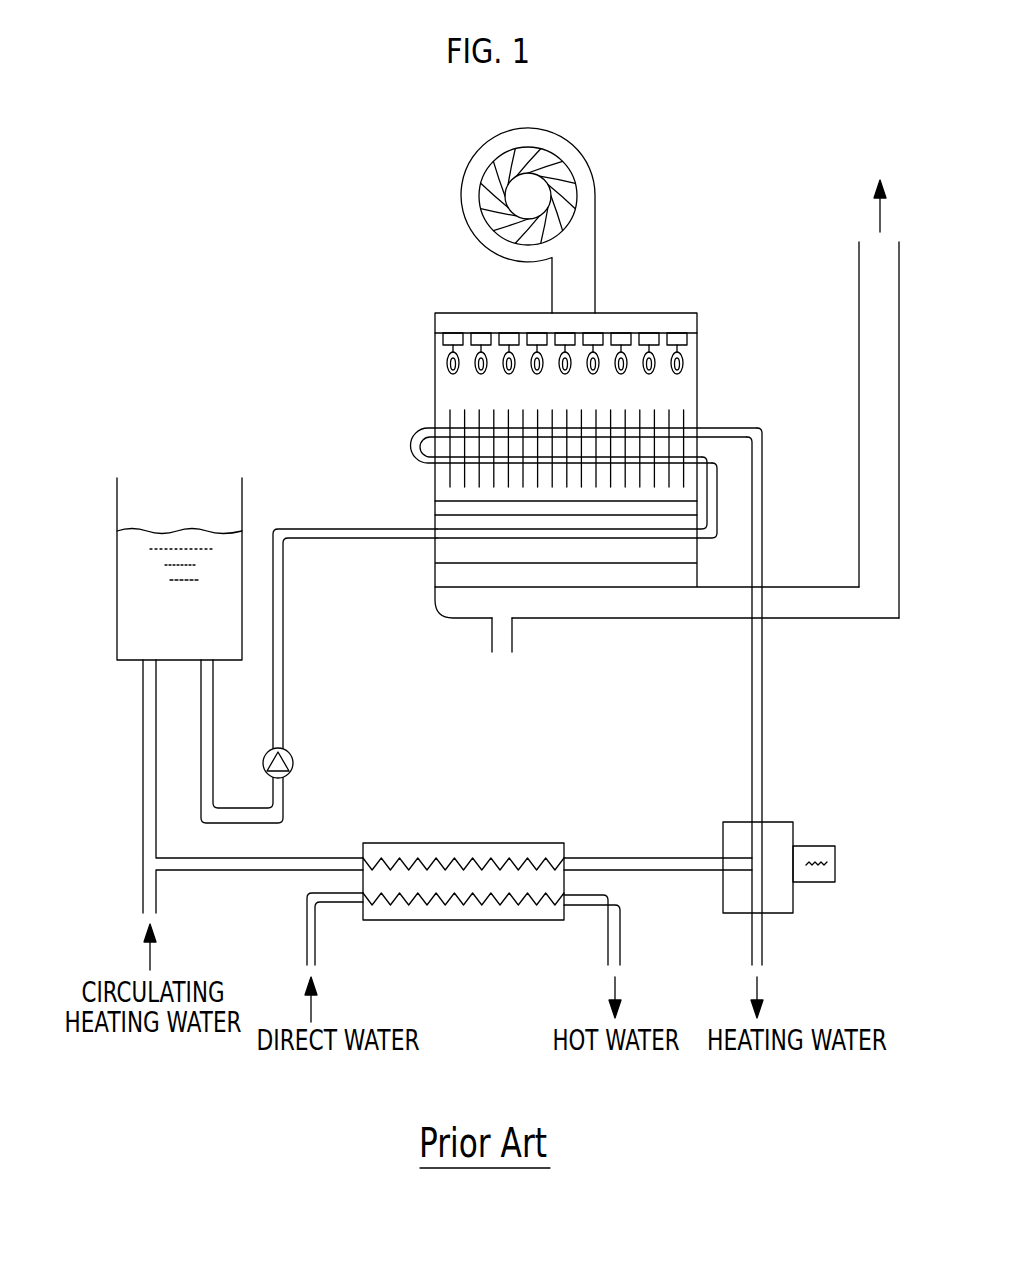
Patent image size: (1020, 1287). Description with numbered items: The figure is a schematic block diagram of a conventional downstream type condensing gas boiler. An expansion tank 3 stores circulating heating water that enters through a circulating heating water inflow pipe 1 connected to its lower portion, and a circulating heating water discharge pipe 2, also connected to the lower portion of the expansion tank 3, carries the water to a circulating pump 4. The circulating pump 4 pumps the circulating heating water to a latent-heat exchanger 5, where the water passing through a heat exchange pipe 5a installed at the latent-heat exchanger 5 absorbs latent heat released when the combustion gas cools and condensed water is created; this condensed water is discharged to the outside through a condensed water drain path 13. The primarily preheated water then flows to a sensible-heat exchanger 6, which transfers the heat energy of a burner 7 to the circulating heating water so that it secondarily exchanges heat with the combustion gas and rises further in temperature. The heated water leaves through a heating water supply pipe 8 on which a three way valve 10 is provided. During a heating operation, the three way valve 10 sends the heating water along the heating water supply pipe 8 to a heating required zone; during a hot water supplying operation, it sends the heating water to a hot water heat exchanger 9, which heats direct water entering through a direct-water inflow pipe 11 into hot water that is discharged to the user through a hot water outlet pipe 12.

The circulating heating water inflow pipe 1 is at (132, 776).
The circulating heating water discharge pipe 2 is at (216, 711).
The expansion tank 3 is at (117, 568).
The circulating pump 4 is at (294, 762).
The latent-heat exchanger 5 is at (447, 523).
The heat exchange pipe 5a is at (460, 543).
The sensible-heat exchanger 6 is at (690, 385).
The burner 7 is at (700, 335).
The heating water supply pipe 8 is at (750, 935).
The hot water heat exchanger 9 is at (548, 843).
The three way valve 10 is at (778, 820).
The direct-water inflow pipe 11 is at (305, 935).
The hot water outlet pipe 12 is at (608, 935).
The condensed water drain path 13 is at (512, 632).